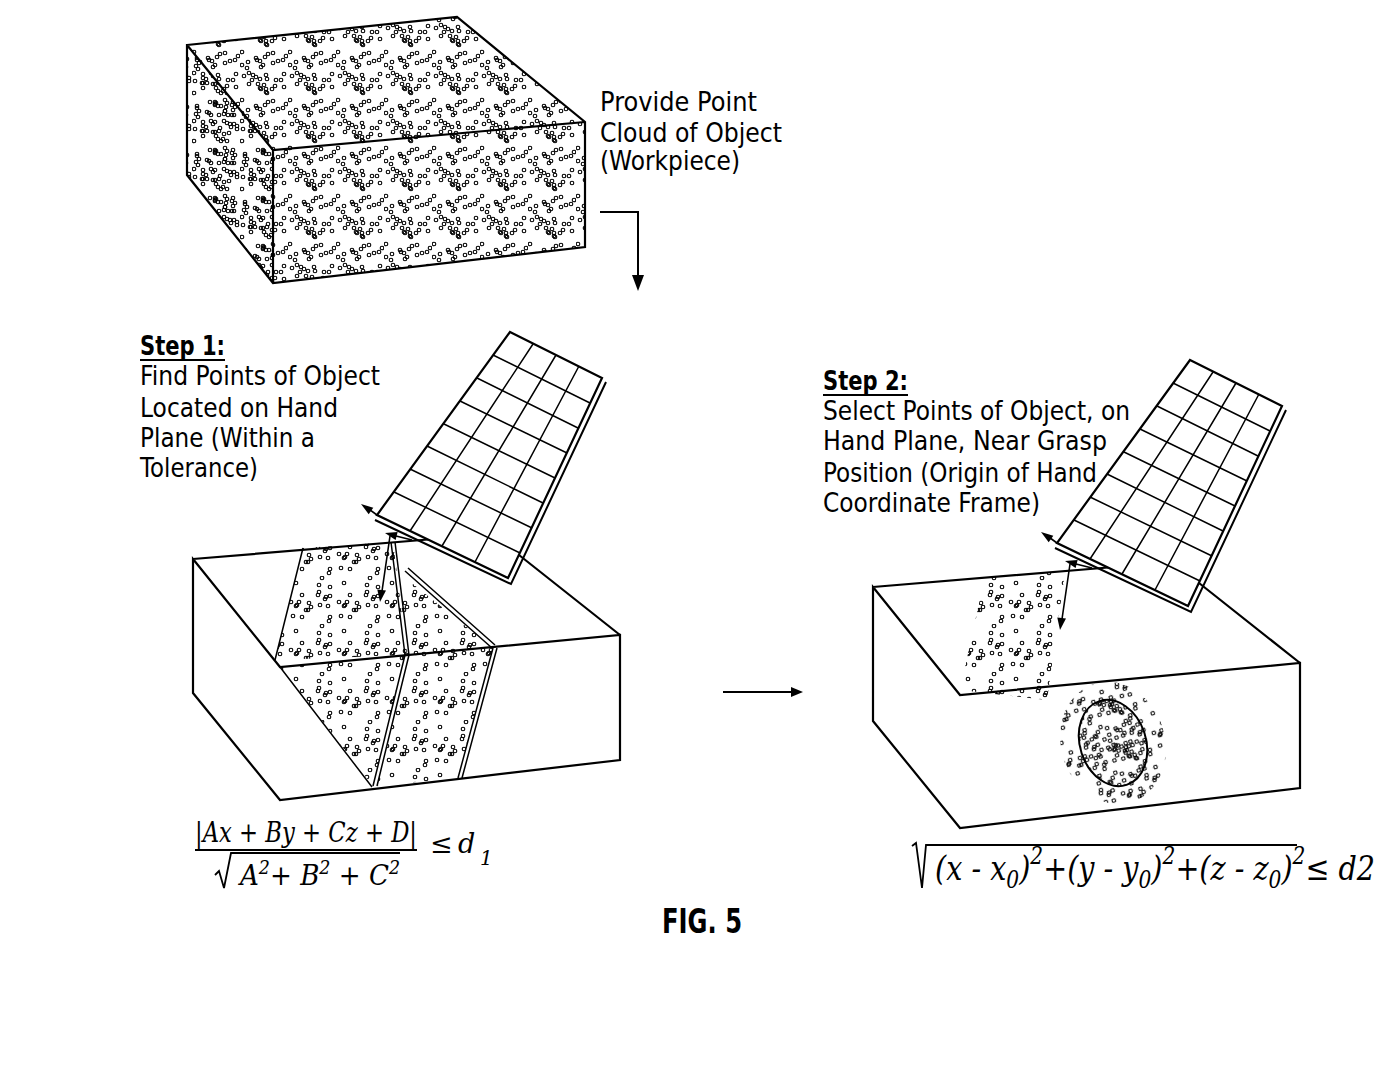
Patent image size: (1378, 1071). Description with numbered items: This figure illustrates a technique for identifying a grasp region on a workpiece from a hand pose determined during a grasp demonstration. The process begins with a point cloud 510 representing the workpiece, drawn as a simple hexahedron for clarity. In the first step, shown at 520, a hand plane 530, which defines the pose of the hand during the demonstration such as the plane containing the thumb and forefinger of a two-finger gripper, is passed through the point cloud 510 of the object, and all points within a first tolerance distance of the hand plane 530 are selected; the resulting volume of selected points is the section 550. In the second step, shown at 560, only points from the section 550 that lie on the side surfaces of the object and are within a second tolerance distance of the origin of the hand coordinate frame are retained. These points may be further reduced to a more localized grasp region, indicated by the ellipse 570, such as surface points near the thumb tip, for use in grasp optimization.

The point cloud 510 is at (232, 232).
The first point selection step illustration 520 is at (170, 599).
The hand plane 530 is at (573, 453).
The section 550 is at (398, 700).
The second point selection step illustration 560 is at (850, 736).
The ellipse 570 is at (1145, 752).